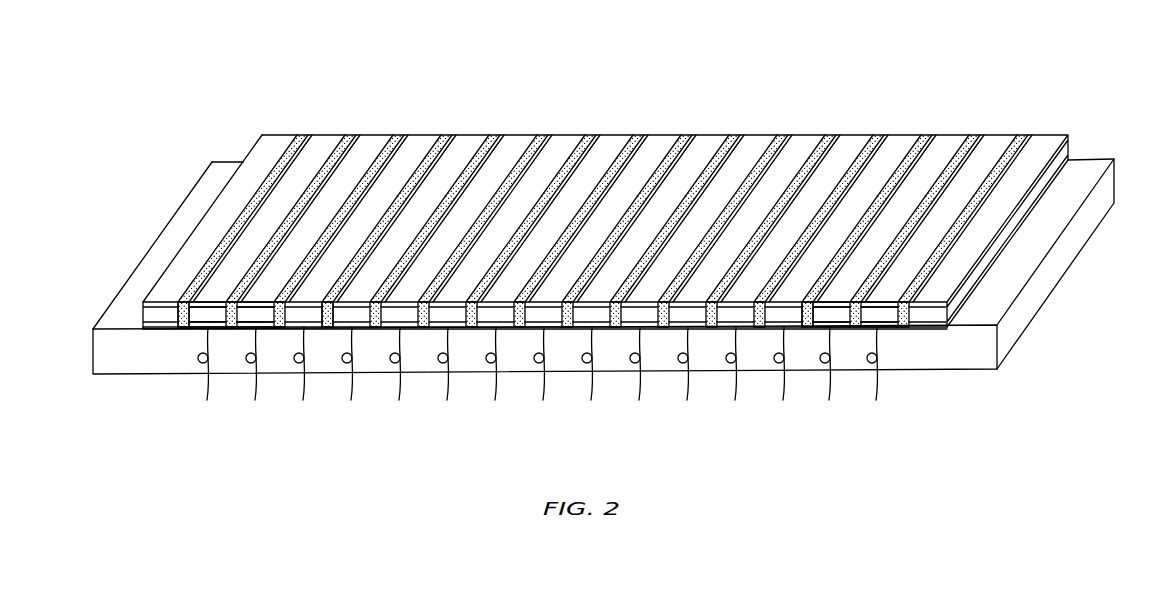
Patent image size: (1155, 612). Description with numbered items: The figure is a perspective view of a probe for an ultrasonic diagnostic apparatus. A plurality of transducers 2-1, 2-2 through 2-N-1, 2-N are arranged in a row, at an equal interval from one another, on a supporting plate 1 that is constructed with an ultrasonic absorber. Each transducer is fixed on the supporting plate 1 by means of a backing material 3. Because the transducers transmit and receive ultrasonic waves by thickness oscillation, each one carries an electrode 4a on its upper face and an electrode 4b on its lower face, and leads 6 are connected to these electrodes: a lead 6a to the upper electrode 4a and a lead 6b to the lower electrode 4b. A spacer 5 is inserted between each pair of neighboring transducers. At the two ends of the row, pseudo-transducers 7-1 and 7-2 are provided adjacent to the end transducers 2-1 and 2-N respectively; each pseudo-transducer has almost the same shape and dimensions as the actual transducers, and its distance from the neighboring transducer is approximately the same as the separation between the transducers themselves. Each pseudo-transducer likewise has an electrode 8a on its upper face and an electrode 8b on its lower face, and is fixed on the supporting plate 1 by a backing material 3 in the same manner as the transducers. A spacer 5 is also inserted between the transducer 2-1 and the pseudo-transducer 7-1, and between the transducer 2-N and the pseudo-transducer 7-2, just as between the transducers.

The supporting plate 1 is at (128, 366).
The transducer 2-1 is at (323, 134).
The transducer 2-2 is at (368, 134).
The transducer 2-N-1 is at (940, 134).
The transducer 2-N is at (987, 134).
The backing material 3 is at (290, 330).
The electrode 4a is at (312, 157).
The electrode 4b is at (197, 328).
The spacer 5 is at (328, 330).
The lead 6 is at (605, 196).
The lead 6a is at (470, 134).
The lead 6b is at (590, 387).
The pseudo-transducer 7-1 is at (264, 134).
The pseudo-transducer 7-2 is at (1065, 132).
The electrode 8a is at (1100, 230).
The electrode 8b is at (148, 330).